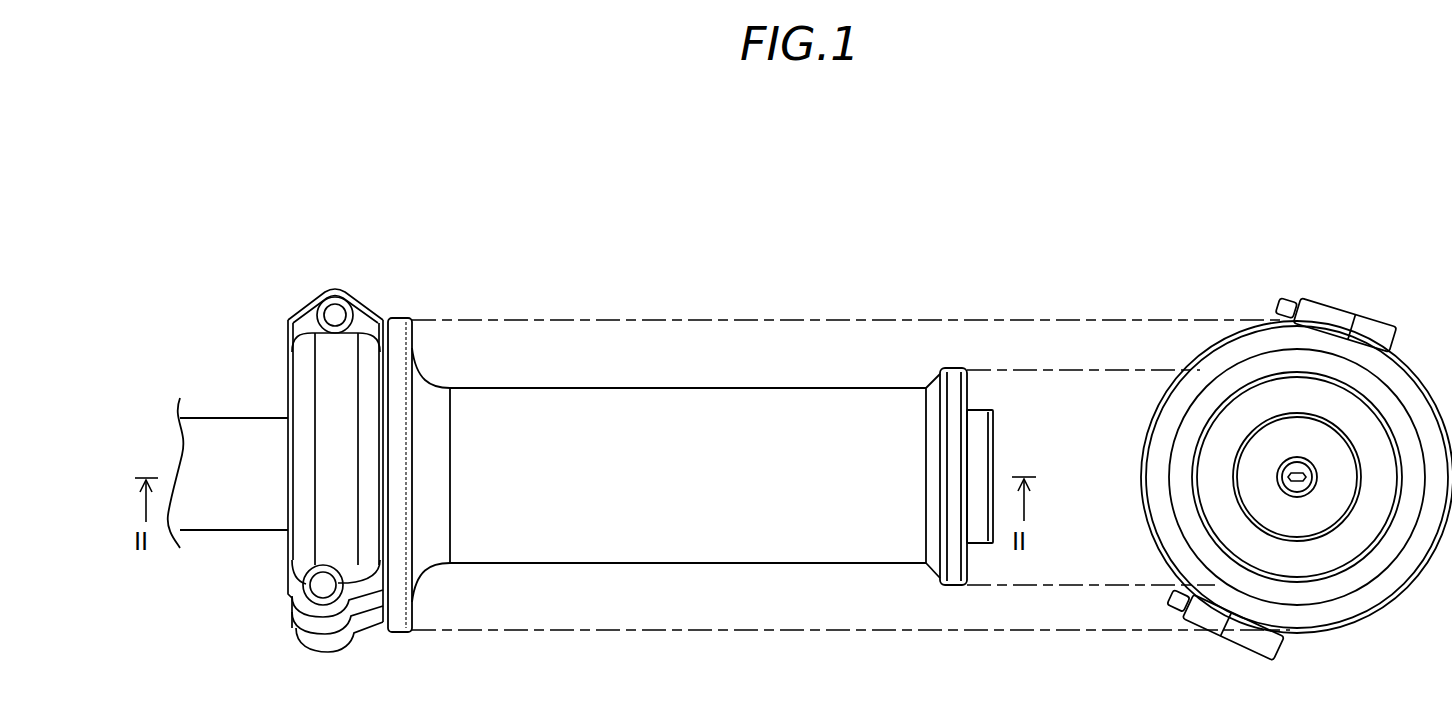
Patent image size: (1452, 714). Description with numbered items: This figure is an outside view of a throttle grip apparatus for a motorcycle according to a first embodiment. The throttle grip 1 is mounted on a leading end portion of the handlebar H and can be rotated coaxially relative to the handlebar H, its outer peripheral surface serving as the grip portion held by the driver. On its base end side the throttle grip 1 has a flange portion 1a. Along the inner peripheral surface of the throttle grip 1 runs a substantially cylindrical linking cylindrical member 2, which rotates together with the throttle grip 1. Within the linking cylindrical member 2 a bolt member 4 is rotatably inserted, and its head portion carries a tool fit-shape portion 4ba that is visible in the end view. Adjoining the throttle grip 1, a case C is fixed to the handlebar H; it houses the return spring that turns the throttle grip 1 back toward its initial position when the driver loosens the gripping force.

The throttle grip 1 is at (582, 388).
The flange portion 1a is at (400, 318).
The linking cylindrical member 2 is at (993, 437).
The bolt member 4 is at (1278, 490).
The tool fit-shape portion 4ba is at (1318, 478).
The case C is at (296, 366).
The handlebar H is at (208, 418).